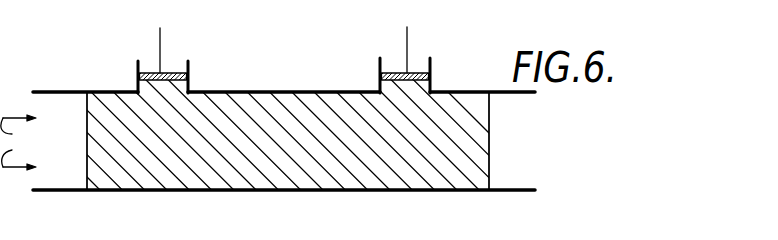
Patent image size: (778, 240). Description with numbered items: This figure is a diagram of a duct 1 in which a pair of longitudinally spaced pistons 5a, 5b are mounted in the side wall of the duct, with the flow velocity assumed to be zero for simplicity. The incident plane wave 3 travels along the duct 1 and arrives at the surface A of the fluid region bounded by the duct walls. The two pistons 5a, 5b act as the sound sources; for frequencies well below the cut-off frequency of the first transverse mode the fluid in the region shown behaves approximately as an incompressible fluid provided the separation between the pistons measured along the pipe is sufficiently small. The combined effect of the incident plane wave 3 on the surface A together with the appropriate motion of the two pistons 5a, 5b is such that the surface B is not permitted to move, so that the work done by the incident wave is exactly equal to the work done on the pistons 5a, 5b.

The duct 1 is at (68, 91).
The incident plane wave 3 is at (19, 142).
The piston 5a is at (178, 62).
The piston 5b is at (395, 62).
The surface A is at (73, 141).
The surface B is at (502, 141).